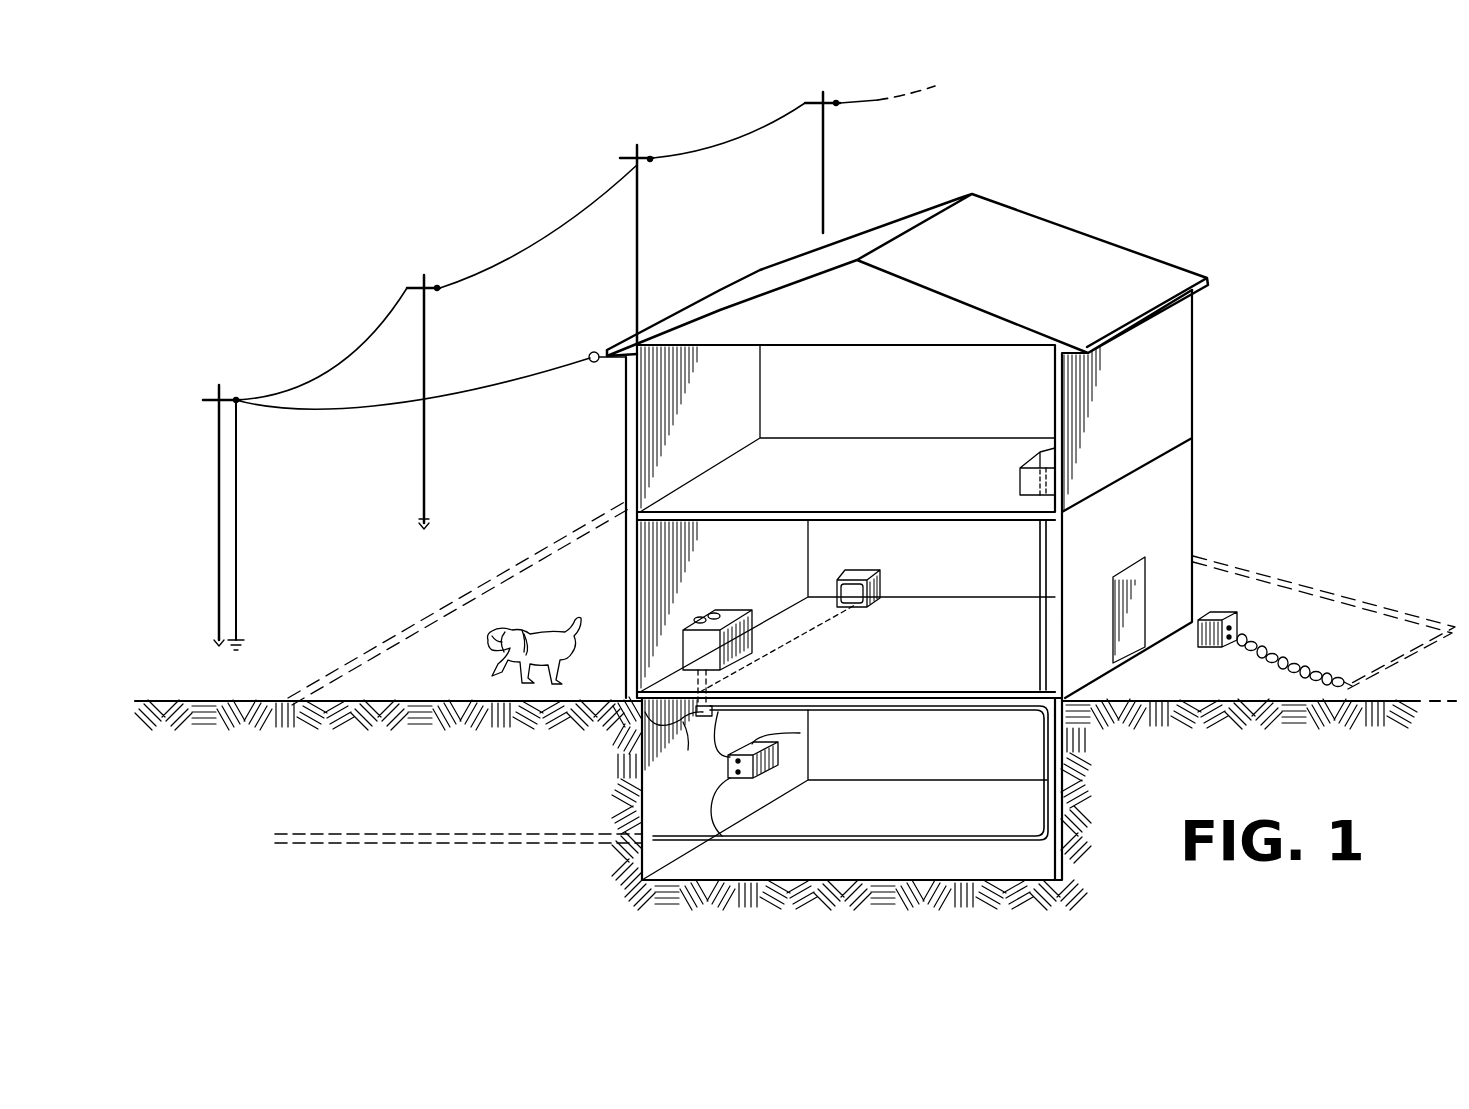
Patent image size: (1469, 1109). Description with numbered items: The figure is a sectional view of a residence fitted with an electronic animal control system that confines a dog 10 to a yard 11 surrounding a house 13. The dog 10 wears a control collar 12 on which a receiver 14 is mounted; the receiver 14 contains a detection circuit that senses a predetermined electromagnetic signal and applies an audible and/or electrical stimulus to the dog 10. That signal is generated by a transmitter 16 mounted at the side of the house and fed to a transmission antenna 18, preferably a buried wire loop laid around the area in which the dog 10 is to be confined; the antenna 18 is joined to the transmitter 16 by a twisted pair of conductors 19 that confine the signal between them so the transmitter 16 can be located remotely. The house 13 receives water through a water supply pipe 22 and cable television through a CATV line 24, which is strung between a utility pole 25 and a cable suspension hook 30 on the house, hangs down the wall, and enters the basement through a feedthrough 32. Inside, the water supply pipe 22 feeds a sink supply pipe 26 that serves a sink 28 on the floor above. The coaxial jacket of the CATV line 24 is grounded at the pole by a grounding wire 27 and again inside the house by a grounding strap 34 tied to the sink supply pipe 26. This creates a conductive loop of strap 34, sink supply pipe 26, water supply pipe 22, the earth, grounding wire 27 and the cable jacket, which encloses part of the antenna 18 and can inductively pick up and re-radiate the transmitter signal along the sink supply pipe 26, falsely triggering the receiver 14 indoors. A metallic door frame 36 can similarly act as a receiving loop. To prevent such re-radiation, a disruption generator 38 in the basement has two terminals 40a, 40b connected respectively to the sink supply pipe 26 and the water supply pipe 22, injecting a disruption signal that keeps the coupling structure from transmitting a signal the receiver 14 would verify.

The dog 10 is at (565, 622).
The yard 11 is at (608, 574).
The control collar 12 is at (522, 630).
The house 13 is at (1047, 245).
The receiver 14 is at (538, 632).
The transmitter 16 is at (1226, 619).
The transmission antenna 18 is at (1330, 592).
The twisted pair of conductors 19 is at (1292, 658).
The water supply pipe 22 is at (457, 832).
The cable television (CATV) line 24 is at (503, 392).
The utility pole 25 is at (219, 505).
The sink supply pipe 26 is at (907, 720).
The grounding wire 27 is at (236, 480).
The sink 28 is at (733, 610).
The cable suspension hook 30 is at (594, 356).
The feedthrough 32 is at (678, 732).
The grounding strap 34 is at (686, 738).
The metallic door frame 36 is at (1140, 597).
The disruption generator 38 is at (778, 757).
The terminal 40a is at (800, 735).
The terminal 40b is at (767, 773).